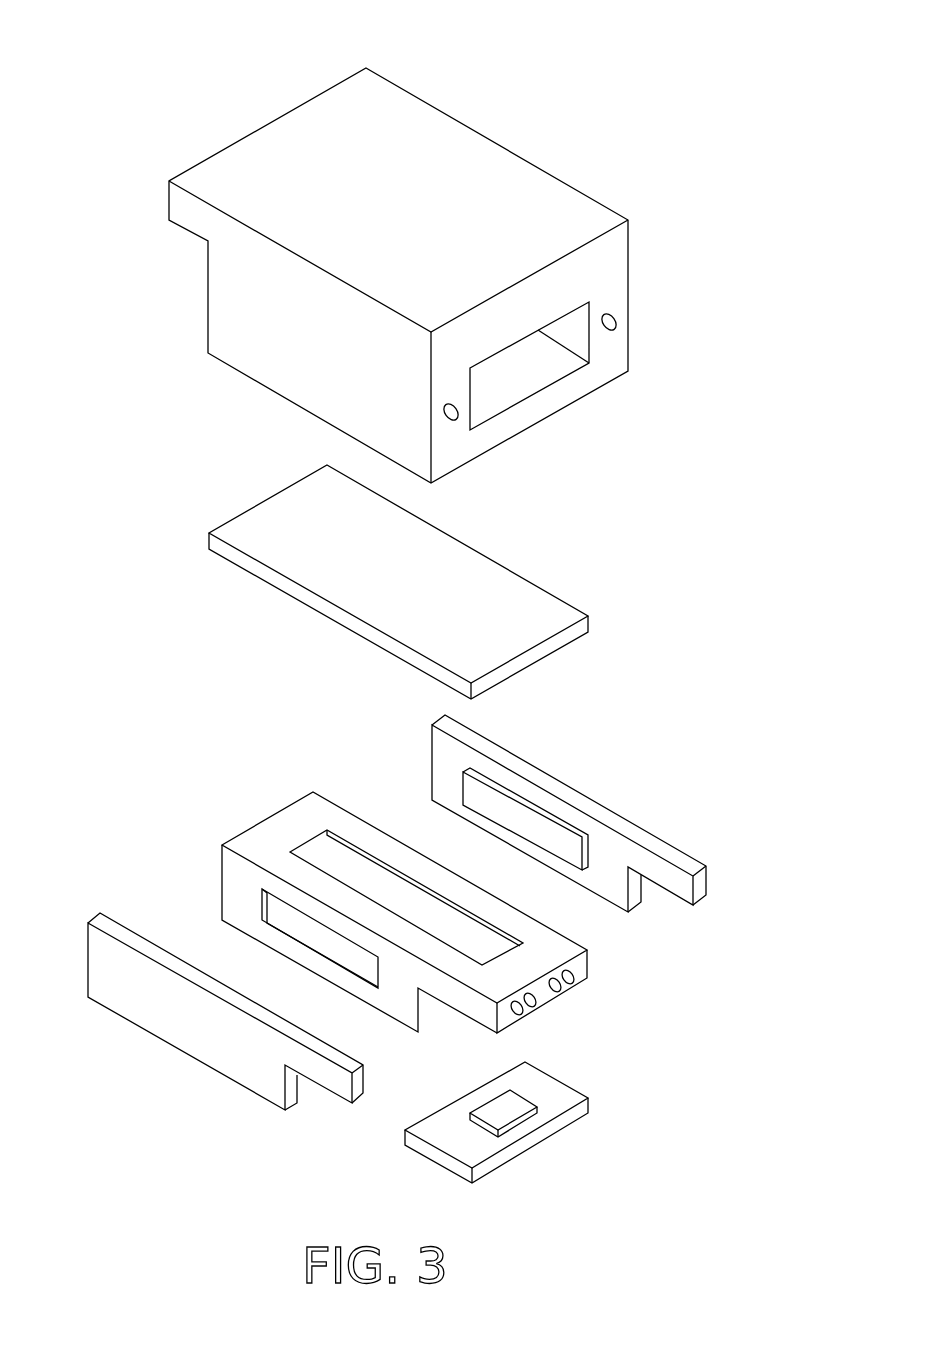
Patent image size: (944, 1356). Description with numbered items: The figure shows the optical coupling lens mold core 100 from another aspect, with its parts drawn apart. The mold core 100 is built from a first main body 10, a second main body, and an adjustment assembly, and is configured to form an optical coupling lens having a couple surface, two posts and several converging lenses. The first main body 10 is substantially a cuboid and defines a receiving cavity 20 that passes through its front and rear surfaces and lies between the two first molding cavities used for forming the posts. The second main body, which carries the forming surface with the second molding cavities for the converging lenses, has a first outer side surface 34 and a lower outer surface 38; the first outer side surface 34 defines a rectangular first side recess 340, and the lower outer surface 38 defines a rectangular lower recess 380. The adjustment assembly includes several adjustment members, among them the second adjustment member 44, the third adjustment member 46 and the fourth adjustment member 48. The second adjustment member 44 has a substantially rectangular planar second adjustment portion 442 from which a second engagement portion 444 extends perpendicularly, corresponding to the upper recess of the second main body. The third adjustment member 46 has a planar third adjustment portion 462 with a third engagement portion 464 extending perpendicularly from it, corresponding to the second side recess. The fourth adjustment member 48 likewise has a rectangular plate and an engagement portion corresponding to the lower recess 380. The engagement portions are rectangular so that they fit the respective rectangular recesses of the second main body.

The optical coupling lens mold core 100 is at (146, 68).
The first main body 10 is at (512, 176).
The fourth adjustment member 48 is at (473, 575).
The third adjustment member 46 is at (582, 813).
The third adjustment portion 462 is at (618, 825).
The third engagement portion 464 is at (525, 820).
The receiving cavity 20 is at (404, 912).
The lower outer surface 38 is at (285, 825).
The lower recess 380 is at (335, 860).
The first outer side surface 34 is at (403, 1005).
The first side recess 340 is at (275, 907).
The second adjustment member 44 is at (562, 1117).
The second adjustment portion 442 is at (555, 1108).
The second engagement portion 444 is at (520, 1105).